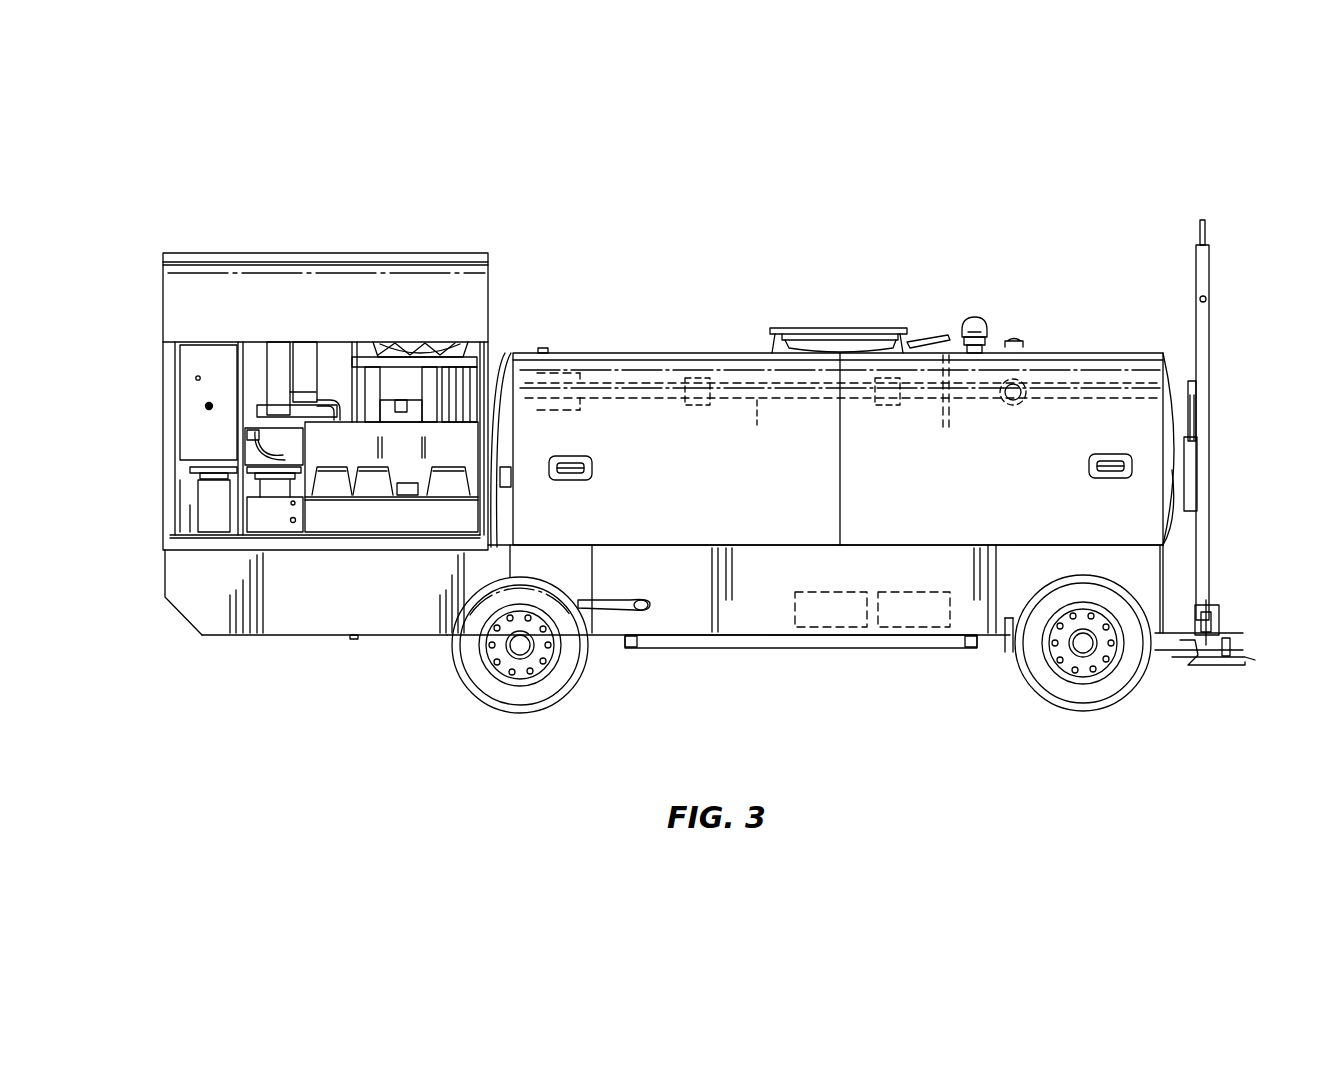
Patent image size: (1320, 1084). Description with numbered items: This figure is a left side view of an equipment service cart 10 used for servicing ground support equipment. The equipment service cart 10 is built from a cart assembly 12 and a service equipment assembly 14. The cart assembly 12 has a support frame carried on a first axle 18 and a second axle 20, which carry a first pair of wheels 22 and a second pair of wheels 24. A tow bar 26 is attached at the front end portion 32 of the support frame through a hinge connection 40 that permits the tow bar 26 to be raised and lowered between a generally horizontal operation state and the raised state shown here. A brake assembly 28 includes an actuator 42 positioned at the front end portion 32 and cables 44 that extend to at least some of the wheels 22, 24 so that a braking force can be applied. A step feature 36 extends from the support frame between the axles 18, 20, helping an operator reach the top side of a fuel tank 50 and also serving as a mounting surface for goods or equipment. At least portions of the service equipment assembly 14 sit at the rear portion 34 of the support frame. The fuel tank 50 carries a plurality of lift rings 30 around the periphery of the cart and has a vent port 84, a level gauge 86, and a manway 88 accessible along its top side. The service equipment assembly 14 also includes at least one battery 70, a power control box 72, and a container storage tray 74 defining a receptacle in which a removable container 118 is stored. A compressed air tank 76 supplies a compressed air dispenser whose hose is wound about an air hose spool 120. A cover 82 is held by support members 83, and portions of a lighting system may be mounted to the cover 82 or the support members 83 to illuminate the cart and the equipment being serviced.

The equipment service cart 10 is at (1088, 208).
The cart assembly 12 is at (340, 638).
The service equipment assembly 14 is at (314, 232).
The first axle 18 is at (1095, 633).
The second axle 20 is at (508, 648).
The first pair of wheels 22 is at (1092, 698).
The second pair of wheels 24 is at (475, 690).
The tow bar 26 is at (757, 425).
The brake assembly 28 is at (1197, 393).
The lift rings 30 is at (568, 463).
The front end portion 32 is at (1158, 607).
The rear portion 34 is at (190, 598).
The step feature 36 is at (782, 648).
The hinge connection 40 is at (1225, 640).
The actuator 42 is at (1192, 380).
The cables 44 is at (610, 608).
The fuel tank 50 is at (1110, 348).
The battery 70 is at (835, 618).
The power control box 72 is at (207, 407).
The container storage tray 74 is at (352, 503).
The compressed air tank 76 is at (418, 345).
The cover 82 is at (488, 280).
The support members 83 is at (488, 348).
The vent port 84 is at (968, 317).
The level gauge 86 is at (544, 348).
The manway 88 is at (828, 328).
The removable container 118 is at (430, 495).
The air hose spool 120 is at (240, 355).